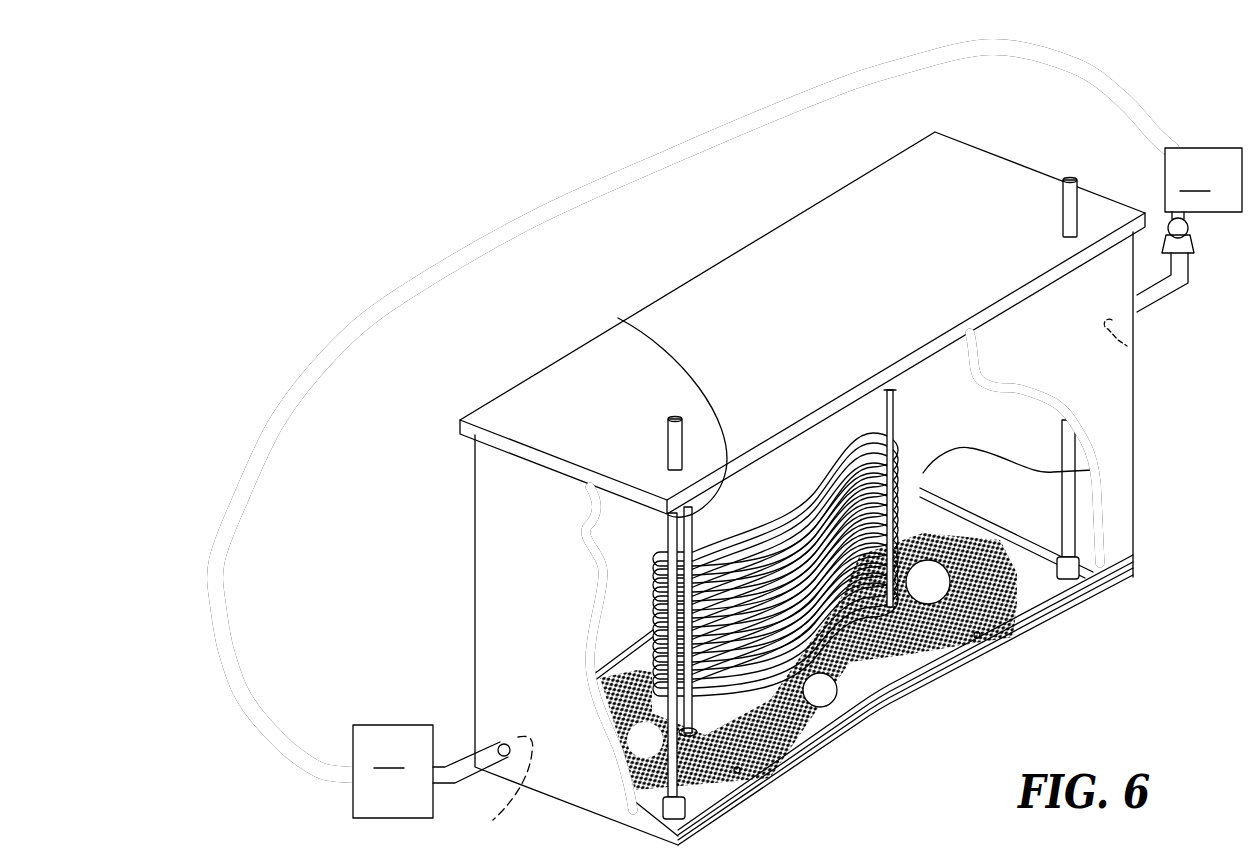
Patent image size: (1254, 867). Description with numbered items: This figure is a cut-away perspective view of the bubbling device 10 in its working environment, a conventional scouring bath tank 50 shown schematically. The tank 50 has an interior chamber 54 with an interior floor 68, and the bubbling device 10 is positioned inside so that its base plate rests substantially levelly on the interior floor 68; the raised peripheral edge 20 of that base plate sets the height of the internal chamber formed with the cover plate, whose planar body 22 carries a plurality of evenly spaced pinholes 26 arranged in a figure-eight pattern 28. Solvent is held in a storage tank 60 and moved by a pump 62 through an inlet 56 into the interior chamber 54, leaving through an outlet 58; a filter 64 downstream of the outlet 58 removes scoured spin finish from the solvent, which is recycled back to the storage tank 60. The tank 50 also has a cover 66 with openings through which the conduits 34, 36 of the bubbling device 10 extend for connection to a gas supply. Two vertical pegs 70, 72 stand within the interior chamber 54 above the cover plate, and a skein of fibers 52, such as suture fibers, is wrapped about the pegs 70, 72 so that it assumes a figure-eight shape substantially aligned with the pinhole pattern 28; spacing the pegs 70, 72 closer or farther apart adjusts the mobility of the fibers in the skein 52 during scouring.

The bubbling device 10 is at (641, 809).
The raised peripheral edge 20 is at (827, 743).
The body of cover plate 22 is at (1023, 597).
The pinholes 26 is at (747, 773).
The pinhole pattern 28 is at (822, 708).
The conduit 34 is at (670, 443).
The conduit 36 is at (1066, 203).
The scouring bath tank 50 is at (668, 262).
The skein of fibers 52 is at (1093, 470).
The interior chamber 54 is at (616, 522).
The inlet 56 is at (1127, 346).
The outlet 58 is at (510, 813).
The storage tank 60 is at (1203, 180).
The pump 62 is at (1194, 236).
The filter 64 is at (431, 771).
The cover 66 is at (495, 415).
The interior floor 68 is at (1027, 538).
The vertical peg 70 is at (640, 318).
The vertical peg 72 is at (886, 410).